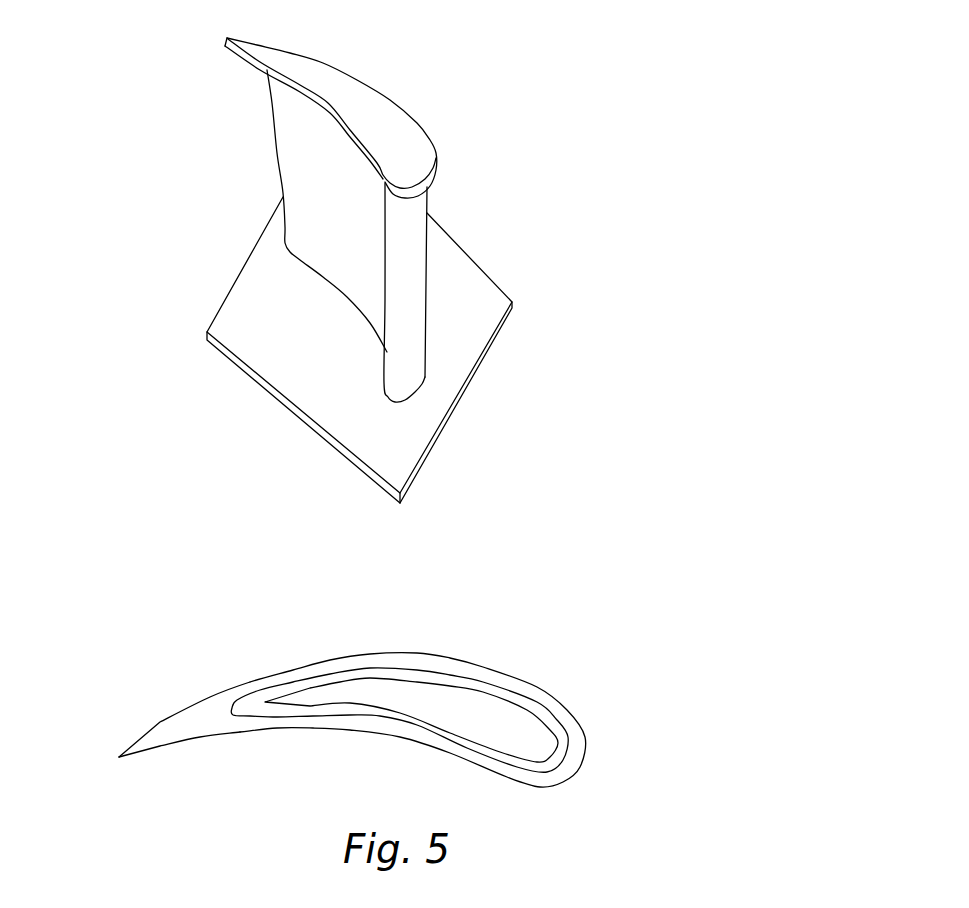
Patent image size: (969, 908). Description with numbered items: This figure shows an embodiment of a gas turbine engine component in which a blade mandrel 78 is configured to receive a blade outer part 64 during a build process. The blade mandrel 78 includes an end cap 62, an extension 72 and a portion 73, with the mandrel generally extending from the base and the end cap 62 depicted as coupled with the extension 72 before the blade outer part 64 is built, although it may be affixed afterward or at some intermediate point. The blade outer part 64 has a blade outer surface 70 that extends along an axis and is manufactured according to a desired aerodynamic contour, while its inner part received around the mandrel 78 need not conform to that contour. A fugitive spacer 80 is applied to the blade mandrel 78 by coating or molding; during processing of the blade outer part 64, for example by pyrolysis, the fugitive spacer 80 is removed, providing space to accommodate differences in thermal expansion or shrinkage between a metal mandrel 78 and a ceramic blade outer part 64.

The end cap 62 is at (367, 107).
The blade outer part 64 is at (198, 723).
The blade outer surface 70 is at (370, 733).
The extension 72 is at (308, 157).
The portion 73 is at (471, 297).
The blade mandrel 78 is at (505, 138).
The fugitive spacer 80 is at (542, 715).